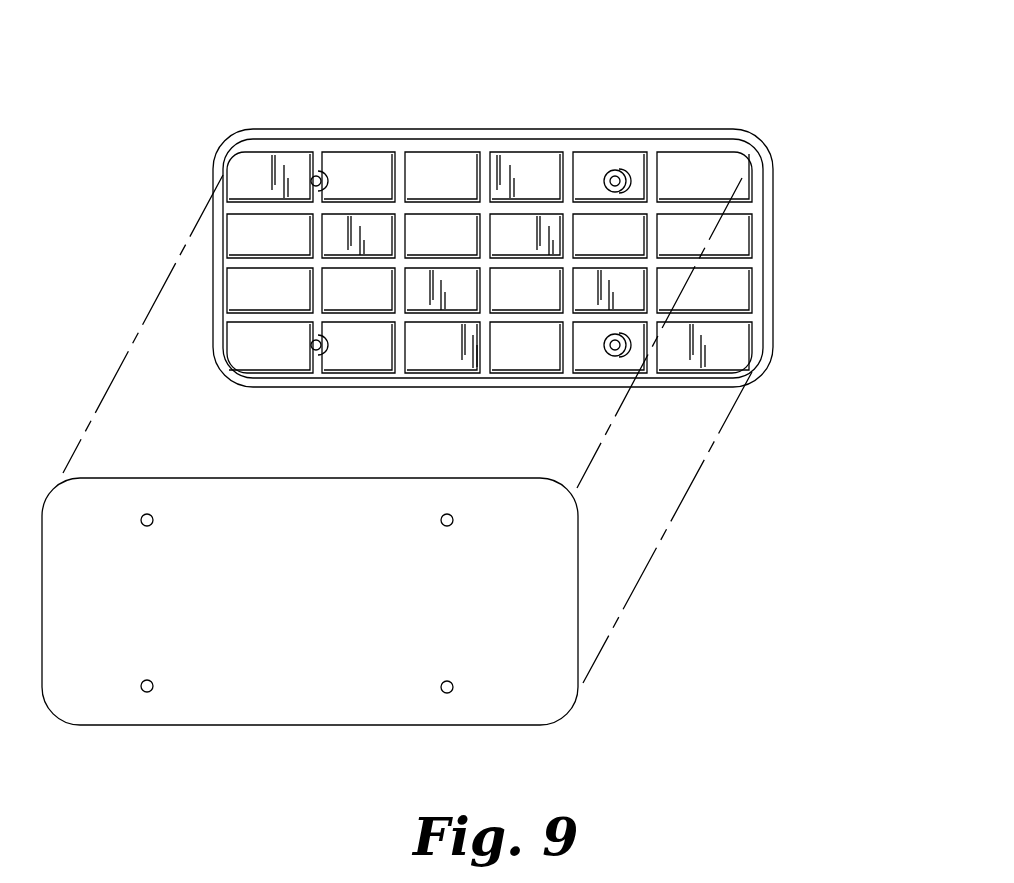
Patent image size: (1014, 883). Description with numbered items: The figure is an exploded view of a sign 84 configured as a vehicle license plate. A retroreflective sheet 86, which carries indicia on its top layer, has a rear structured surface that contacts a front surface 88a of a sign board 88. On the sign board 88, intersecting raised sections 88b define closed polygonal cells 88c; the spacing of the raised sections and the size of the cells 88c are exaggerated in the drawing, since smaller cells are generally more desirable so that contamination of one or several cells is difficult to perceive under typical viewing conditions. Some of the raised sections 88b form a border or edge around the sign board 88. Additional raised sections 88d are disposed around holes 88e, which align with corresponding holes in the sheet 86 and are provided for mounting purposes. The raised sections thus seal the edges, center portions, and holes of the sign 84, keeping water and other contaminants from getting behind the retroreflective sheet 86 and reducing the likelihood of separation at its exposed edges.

The sign 84 is at (754, 84).
The retroreflective sheet 86 is at (578, 532).
The sign board 88 is at (460, 232).
The front surface 88a is at (248, 155).
The raised sections 88b is at (489, 258).
The closed polygonal cells 88c is at (470, 188).
The additional raised sections 88d is at (616, 172).
The holes 88e is at (318, 173).